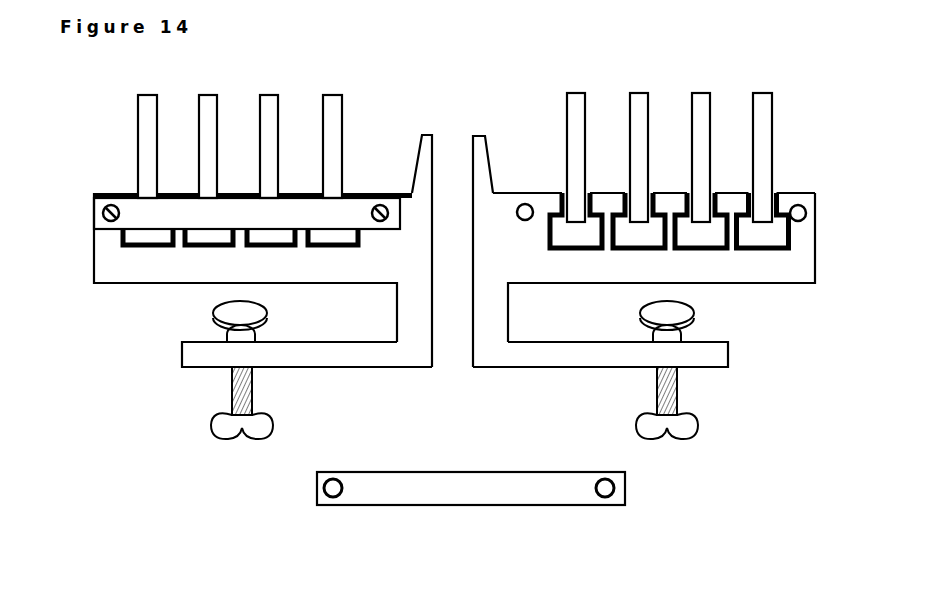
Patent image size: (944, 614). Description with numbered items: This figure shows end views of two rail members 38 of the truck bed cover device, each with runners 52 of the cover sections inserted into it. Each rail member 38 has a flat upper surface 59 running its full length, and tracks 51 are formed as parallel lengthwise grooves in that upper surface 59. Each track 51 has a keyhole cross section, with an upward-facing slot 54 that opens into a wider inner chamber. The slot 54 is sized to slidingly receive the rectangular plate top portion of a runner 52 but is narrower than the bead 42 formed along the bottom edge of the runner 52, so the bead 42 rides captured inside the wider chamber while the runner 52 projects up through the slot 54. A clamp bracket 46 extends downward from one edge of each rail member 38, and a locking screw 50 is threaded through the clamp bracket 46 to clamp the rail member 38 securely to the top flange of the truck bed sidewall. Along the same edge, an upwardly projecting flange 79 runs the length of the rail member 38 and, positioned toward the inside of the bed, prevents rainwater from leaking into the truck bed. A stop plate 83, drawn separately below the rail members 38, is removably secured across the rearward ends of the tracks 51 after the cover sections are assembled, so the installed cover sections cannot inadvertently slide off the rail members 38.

The rail member 38 is at (763, 262).
The bead 42 is at (218, 233).
The clamp bracket 46 is at (202, 353).
The locking screw 50 is at (223, 425).
The track 51 is at (185, 246).
The runner 52 is at (147, 137).
The slot 54 is at (773, 200).
The upper surface 59 is at (167, 193).
The flange 79 is at (433, 148).
The stop plate 83 is at (157, 212).